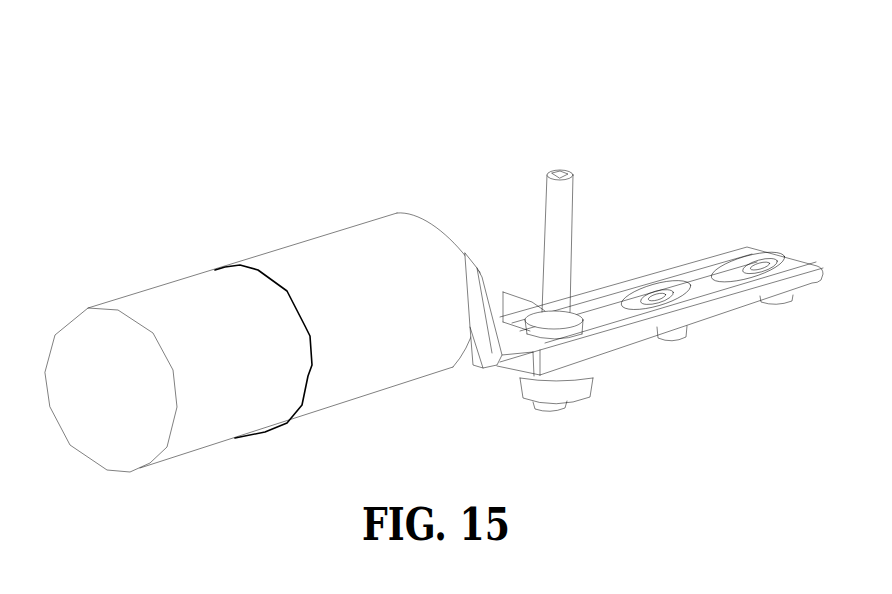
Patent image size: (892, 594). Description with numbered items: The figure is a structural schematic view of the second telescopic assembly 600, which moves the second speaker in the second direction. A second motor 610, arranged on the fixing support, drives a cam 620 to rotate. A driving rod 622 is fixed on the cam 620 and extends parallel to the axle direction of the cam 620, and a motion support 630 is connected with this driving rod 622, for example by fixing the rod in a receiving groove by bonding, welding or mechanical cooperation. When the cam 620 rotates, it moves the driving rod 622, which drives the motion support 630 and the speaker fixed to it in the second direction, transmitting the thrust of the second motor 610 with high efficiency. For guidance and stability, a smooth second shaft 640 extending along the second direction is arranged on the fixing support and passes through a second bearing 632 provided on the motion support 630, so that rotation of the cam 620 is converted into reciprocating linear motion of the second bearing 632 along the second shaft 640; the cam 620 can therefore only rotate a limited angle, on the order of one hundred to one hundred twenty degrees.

The second telescopic assembly 600 is at (434, 251).
The second motor 610 is at (307, 268).
The cam 620 is at (482, 367).
The driving rod 622 is at (508, 355).
The motion support 630 is at (733, 308).
The second bearing 632 is at (563, 387).
The second shaft 640 is at (562, 245).